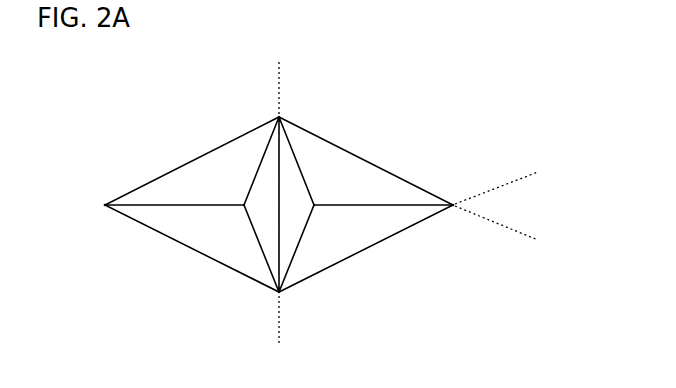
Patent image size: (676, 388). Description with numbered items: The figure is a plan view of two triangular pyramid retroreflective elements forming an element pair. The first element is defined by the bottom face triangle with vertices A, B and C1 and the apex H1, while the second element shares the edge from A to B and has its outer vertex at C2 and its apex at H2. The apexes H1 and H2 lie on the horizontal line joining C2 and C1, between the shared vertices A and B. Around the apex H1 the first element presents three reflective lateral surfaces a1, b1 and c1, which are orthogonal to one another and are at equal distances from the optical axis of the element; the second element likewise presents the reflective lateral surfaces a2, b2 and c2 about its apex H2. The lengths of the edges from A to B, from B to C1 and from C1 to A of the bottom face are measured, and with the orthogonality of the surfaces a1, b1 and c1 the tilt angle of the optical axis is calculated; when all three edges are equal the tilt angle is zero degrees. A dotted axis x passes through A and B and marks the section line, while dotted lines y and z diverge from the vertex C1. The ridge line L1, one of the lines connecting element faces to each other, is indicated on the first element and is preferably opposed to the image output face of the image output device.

The apex of the bottom face triangle A is at (287, 106).
The apex of the bottom face triangle B is at (287, 306).
The apex of the bottom face triangle C1 is at (477, 205).
The apex of the bottom face triangle C2 is at (87, 205).
The apex of the element H1 is at (300, 205).
The apex of the element H2 is at (258, 205).
The reflective lateral surface a1 is at (383, 195).
The reflective lateral surface b1 is at (383, 215).
The reflective lateral surface a2 is at (174, 195).
The reflective lateral surface b2 is at (174, 215).
The reflective lateral surface c1 is at (289, 162).
The reflective lateral surface c2 is at (269, 247).
The section axis x is at (277, 205).
The direction line y is at (502, 184).
The direction line z is at (502, 230).
The ridge line L1 is at (405, 205).